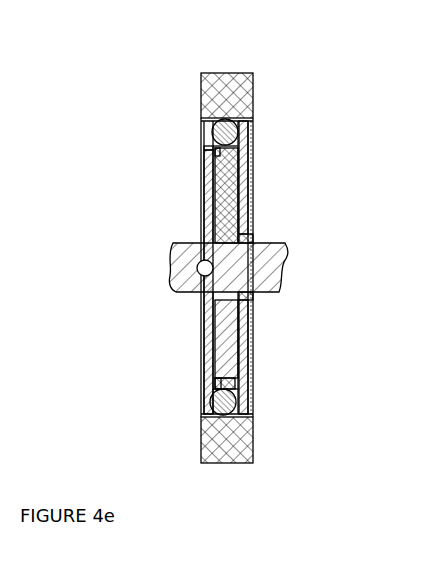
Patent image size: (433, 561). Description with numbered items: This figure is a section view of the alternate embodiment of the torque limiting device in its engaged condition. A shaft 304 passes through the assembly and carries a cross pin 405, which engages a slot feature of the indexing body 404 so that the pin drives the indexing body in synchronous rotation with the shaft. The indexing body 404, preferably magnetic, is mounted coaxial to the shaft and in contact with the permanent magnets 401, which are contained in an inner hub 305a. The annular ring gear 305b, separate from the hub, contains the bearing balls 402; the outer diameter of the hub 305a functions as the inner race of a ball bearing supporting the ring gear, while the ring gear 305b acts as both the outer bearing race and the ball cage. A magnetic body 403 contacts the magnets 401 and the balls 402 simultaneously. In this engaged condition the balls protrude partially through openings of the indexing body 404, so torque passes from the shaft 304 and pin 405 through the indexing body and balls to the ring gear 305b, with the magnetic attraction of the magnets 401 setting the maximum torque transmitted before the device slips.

The shaft 304 is at (159, 275).
The hub 305a is at (229, 192).
The annular ring gear 305b is at (262, 90).
The permanent magnet 401 is at (223, 363).
The bearing ball 402 is at (230, 131).
The magnetic body 403 is at (243, 330).
The indexing body 404 is at (208, 158).
The cross pin 405 is at (207, 271).